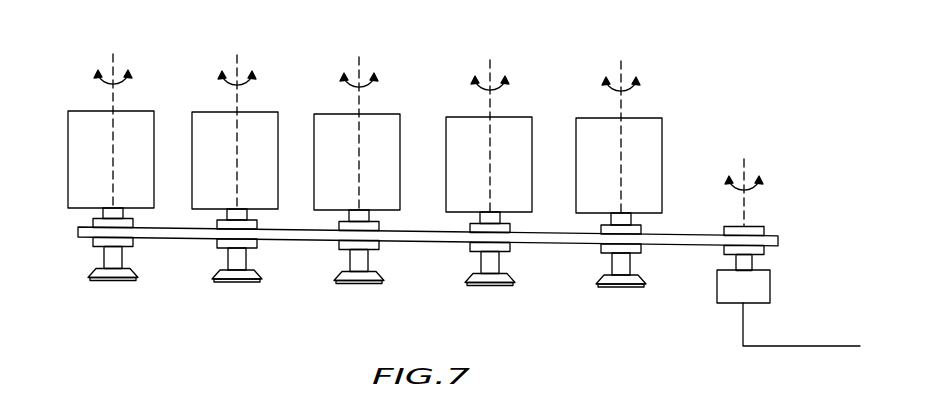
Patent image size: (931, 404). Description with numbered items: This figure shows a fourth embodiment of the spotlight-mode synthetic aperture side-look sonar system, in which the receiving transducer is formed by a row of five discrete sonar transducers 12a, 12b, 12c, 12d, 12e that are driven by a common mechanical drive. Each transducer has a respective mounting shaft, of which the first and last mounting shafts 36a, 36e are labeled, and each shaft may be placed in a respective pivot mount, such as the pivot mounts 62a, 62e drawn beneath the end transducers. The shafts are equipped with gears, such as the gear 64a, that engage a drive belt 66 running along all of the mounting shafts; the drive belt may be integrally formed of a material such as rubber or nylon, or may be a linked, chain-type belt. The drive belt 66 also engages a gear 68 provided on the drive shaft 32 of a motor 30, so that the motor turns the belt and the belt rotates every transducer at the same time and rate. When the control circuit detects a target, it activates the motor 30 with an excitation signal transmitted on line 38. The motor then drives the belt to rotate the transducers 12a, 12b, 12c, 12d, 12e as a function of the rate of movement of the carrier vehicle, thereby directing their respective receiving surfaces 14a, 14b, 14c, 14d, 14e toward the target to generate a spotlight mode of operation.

The discrete sonar transducer 12a is at (87, 119).
The discrete sonar transducer 12b is at (236, 120).
The discrete sonar transducer 12c is at (360, 121).
The discrete sonar transducer 12d is at (491, 124).
The discrete sonar transducer 12e is at (623, 125).
The receiving surface 14a is at (80, 146).
The receiving surface 14b is at (262, 128).
The receiving surface 14c is at (387, 130).
The receiving surface 14d is at (515, 128).
The receiving surface 14e is at (645, 137).
The mounting shaft 36a is at (110, 250).
The mounting shaft 36e is at (612, 258).
The pivot mount 62a is at (113, 280).
The pivot mount 62e is at (627, 285).
The gear 64a is at (130, 238).
The drive belt 66 is at (438, 242).
The gear 68 is at (757, 227).
The drive shaft 32 is at (753, 260).
The motor 30 is at (722, 288).
The line 38 is at (816, 346).